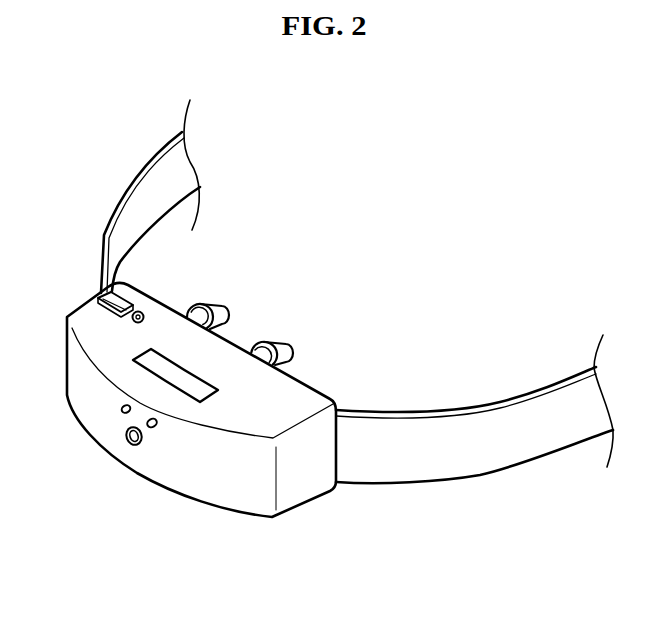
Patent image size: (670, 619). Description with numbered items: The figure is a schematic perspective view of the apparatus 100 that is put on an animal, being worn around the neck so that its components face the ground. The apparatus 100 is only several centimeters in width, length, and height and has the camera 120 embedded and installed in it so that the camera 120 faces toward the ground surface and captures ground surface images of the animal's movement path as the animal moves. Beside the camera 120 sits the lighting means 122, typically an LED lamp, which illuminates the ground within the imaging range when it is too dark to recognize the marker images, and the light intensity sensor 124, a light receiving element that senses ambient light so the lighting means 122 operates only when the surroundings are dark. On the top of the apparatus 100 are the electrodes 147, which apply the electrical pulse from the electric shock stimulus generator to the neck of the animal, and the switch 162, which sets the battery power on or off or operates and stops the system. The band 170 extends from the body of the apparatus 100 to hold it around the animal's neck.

The apparatus 100 is at (238, 493).
The camera 120 is at (128, 444).
The lighting means 122 is at (121, 410).
The light intensity sensor 124 is at (148, 428).
The electrode 147 is at (288, 346).
The switch 162 is at (122, 305).
The band 170 is at (467, 423).